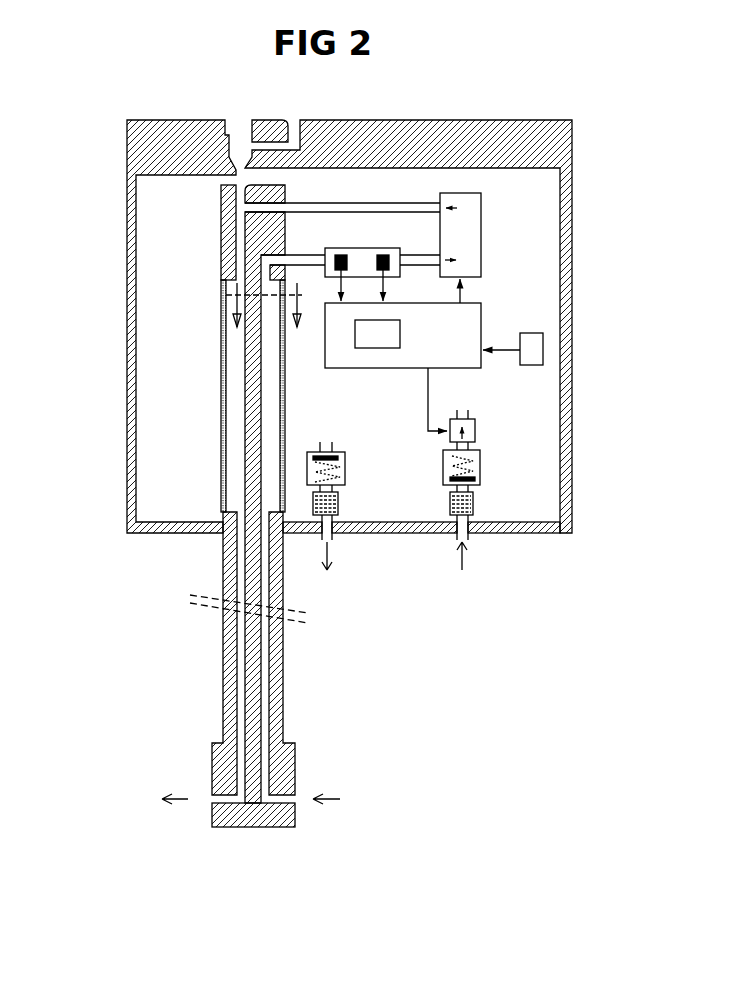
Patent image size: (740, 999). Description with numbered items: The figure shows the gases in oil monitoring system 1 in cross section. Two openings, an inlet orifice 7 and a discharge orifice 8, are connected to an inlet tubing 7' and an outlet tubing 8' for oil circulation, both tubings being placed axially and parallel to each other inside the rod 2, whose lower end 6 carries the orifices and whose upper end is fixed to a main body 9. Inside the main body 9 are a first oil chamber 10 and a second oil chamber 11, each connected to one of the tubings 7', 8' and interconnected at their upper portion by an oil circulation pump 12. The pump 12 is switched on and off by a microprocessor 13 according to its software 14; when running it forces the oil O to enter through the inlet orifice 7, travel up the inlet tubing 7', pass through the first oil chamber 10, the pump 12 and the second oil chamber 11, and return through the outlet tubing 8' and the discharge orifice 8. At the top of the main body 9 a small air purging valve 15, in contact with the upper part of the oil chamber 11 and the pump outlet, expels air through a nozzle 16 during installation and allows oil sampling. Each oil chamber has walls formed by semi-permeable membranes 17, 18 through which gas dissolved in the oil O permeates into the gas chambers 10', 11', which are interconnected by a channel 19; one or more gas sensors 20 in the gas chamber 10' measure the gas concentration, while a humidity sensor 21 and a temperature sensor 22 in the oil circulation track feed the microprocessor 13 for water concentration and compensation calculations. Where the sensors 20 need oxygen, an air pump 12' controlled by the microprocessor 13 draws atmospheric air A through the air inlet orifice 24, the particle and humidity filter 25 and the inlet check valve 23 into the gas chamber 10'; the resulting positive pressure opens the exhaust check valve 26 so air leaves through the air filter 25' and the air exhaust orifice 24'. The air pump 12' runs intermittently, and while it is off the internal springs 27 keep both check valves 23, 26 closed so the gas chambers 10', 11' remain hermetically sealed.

The device 1 is at (127, 573).
The rod 2 is at (283, 695).
The tube bottom end 6 is at (247, 830).
The inlet orifice 7 is at (306, 779).
The inlet tubing 7' is at (296, 657).
The discharge orifice 8 is at (202, 779).
The outlet tubing 8' is at (205, 657).
The main body 9 is at (123, 490).
The first oil chamber 10 is at (240, 539).
The gas chamber 10' is at (450, 350).
The second oil chamber 11 is at (228, 494).
The gas chamber 11' is at (145, 348).
The oil circulation pump 12 is at (485, 235).
The air pump 12' is at (486, 415).
The microprocessor 13 is at (485, 323).
The software 14 is at (403, 337).
The air purging valve 15 is at (240, 117).
The nozzle 16 is at (293, 117).
The membrane 17 is at (288, 420).
The membrane 18 is at (218, 450).
The channel 19 is at (226, 170).
The gas sensor 20 is at (540, 332).
The humidity sensor 21 is at (382, 250).
The temperature sensor 22 is at (338, 250).
The inlet check valve 23 is at (487, 442).
The air inlet orifice 24 is at (492, 555).
The air exhaust orifice 24' is at (358, 555).
The filter 25 is at (490, 508).
The air filter 25' is at (355, 510).
The exhaust check valve 26 is at (347, 450).
The internal spring 27 is at (338, 470).
The atmospheric air A is at (333, 576).
The oil O is at (177, 808).